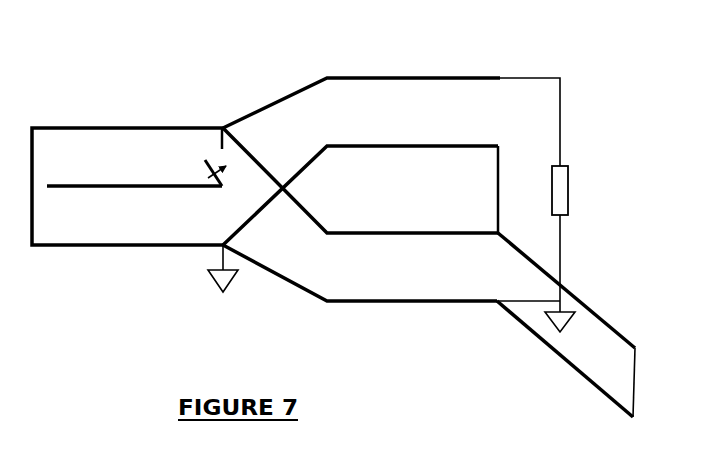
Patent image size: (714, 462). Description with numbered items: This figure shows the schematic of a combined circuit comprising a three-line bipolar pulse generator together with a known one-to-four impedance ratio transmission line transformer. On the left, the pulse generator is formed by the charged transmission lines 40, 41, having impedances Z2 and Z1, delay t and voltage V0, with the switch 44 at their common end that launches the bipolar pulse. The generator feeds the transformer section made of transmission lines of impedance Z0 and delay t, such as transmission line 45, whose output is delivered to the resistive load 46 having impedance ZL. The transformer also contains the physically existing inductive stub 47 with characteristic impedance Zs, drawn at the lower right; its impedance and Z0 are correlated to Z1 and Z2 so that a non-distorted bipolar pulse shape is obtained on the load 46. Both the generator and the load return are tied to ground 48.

The transmission line 40 is at (93, 138).
The transmission line 41 is at (152, 232).
The switch 44 is at (198, 122).
The transmission line 45 is at (367, 100).
The resistive load 46 is at (365, 270).
The inductive stub 47 is at (585, 342).
The ground 48 is at (543, 315).